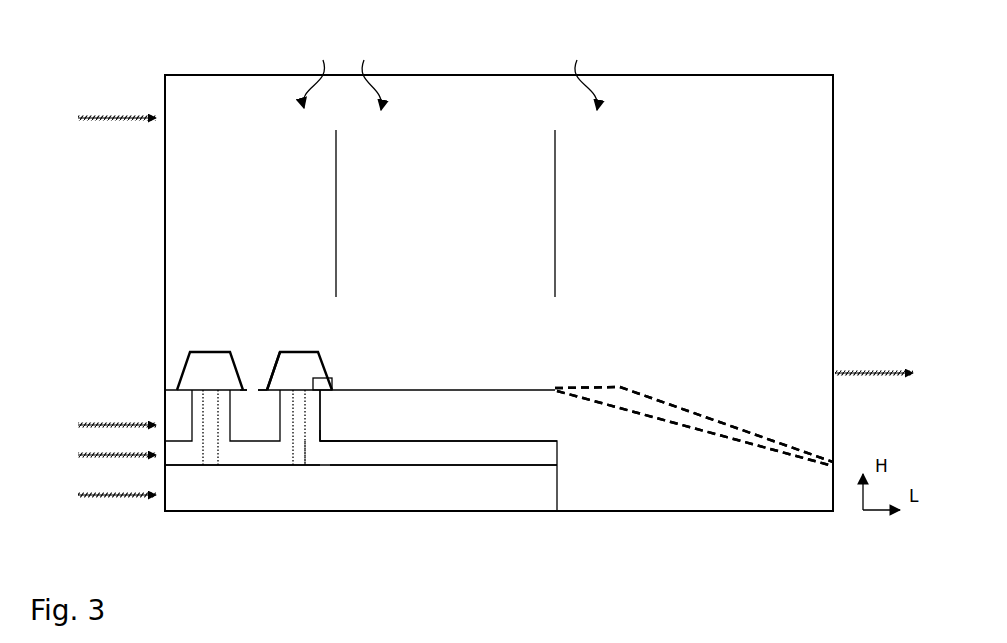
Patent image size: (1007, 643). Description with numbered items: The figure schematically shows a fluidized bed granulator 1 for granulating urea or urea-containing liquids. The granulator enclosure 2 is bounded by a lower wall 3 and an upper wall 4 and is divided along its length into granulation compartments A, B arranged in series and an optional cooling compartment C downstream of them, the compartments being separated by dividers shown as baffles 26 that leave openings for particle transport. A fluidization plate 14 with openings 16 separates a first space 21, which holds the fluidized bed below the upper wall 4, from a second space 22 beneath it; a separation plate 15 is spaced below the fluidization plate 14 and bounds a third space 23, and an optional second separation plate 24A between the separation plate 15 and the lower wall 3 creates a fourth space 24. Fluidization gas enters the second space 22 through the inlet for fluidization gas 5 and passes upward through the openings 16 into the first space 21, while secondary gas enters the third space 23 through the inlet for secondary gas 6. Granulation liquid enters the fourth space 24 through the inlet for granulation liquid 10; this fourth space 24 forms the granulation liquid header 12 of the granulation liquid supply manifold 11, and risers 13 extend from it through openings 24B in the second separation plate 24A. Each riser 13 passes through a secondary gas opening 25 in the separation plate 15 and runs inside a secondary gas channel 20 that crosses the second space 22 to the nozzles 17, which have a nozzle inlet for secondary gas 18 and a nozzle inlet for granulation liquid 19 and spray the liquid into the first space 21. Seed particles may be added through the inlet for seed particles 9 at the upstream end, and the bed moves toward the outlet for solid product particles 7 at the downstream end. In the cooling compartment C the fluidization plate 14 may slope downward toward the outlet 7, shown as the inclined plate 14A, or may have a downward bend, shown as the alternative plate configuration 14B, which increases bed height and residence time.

The fluidized bed granulator 1 is at (208, 64).
The granulator enclosure 2 is at (490, 76).
The lower wall 3 is at (578, 513).
The upper wall 4 is at (276, 74).
The inlet for fluidization gas 5 is at (105, 427).
The inlet for secondary gas 6 is at (105, 457).
The outlet for solid product particles 7 is at (890, 379).
The inlet for seed particles 9 is at (104, 123).
The inlet for granulation liquid 10 is at (98, 497).
The granulation liquid supply manifold 11 is at (193, 475).
The granulation liquid header 12 is at (273, 475).
The risers 13 is at (212, 455).
The fluidization plate 14 is at (551, 387).
The inclined plate 14A is at (616, 410).
The alternative plate configuration 14B is at (650, 398).
The separation plate 15 is at (528, 441).
The openings 16 is at (248, 386).
The nozzles 17 is at (212, 350).
The nozzle inlet for secondary gas 18 is at (325, 384).
The nozzle inlet for granulation liquid 19 is at (300, 385).
The secondary gas channel 20 is at (325, 395).
The first space 21 is at (360, 371).
The second space 22 is at (361, 415).
The third space 23 is at (361, 456).
The fourth space 24 is at (361, 497).
The second separation plate 24A is at (448, 470).
The openings 24B is at (305, 466).
The secondary gas opening 25 is at (318, 436).
The baffle 26 is at (337, 262).
The granulation compartment A is at (316, 74).
The granulation compartment B is at (370, 75).
The cooling compartment C is at (583, 75).